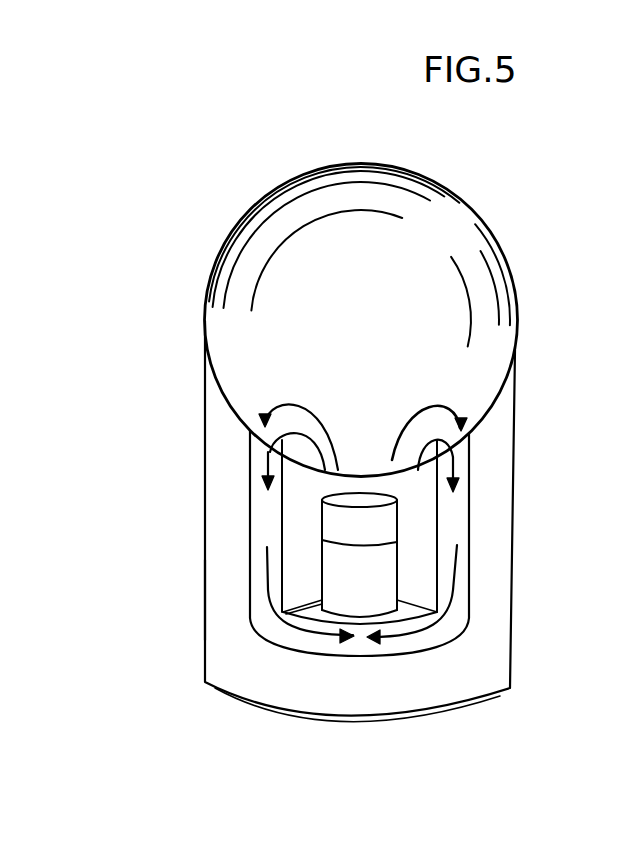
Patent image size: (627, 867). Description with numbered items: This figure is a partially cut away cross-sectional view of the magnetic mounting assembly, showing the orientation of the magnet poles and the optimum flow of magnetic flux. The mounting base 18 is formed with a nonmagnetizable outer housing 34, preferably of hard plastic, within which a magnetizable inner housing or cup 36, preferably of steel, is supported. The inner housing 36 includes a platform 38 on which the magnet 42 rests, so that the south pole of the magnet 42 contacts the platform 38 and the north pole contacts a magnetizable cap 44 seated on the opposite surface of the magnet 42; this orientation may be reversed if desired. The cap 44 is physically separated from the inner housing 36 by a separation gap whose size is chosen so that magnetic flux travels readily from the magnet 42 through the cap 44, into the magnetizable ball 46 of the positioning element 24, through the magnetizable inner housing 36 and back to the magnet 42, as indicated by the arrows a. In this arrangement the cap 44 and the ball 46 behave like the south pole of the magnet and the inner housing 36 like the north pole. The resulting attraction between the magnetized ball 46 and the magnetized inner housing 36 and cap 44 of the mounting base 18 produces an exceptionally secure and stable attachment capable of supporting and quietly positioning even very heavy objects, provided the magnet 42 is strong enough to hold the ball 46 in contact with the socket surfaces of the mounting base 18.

The mounting base 18 is at (513, 497).
The positioning element 24 is at (391, 320).
The outer housing 34 is at (217, 596).
The inner housing 36 is at (463, 572).
The platform 38 is at (408, 617).
The magnet 42 is at (378, 590).
The cap 44 is at (333, 520).
The ball 46 is at (382, 259).
The arrows a is at (407, 425).